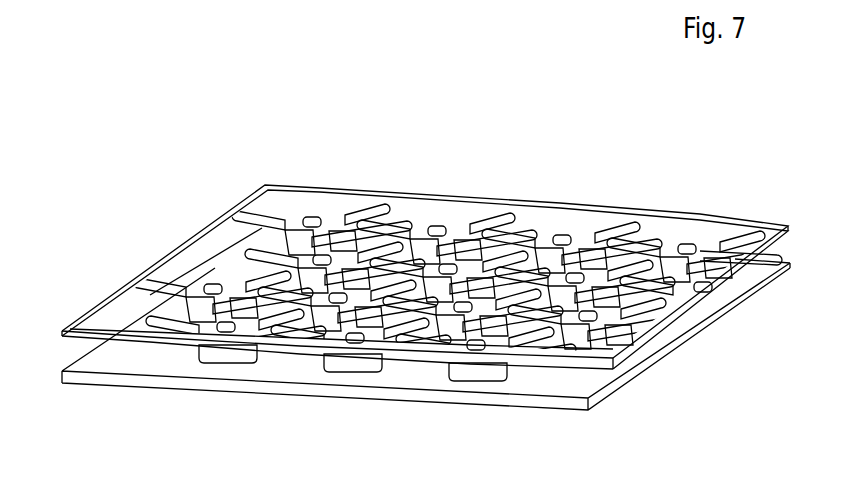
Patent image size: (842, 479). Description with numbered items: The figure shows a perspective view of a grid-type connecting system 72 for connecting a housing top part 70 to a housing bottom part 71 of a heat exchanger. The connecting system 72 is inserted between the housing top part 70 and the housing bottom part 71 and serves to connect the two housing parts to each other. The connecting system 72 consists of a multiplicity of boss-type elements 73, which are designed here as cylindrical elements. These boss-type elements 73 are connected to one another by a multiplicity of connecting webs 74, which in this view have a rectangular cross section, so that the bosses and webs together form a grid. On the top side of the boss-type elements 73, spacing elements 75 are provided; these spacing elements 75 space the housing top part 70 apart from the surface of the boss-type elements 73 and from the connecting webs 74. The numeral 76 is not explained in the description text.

The housing top part 70 is at (80, 326).
The housing bottom part 71 is at (89, 378).
The connecting system 72 is at (451, 377).
The boss-type elements 73 is at (340, 366).
The connecting webs 74 is at (393, 240).
The spacing elements 75 is at (450, 230).
The lattice module 76 is at (149, 229).